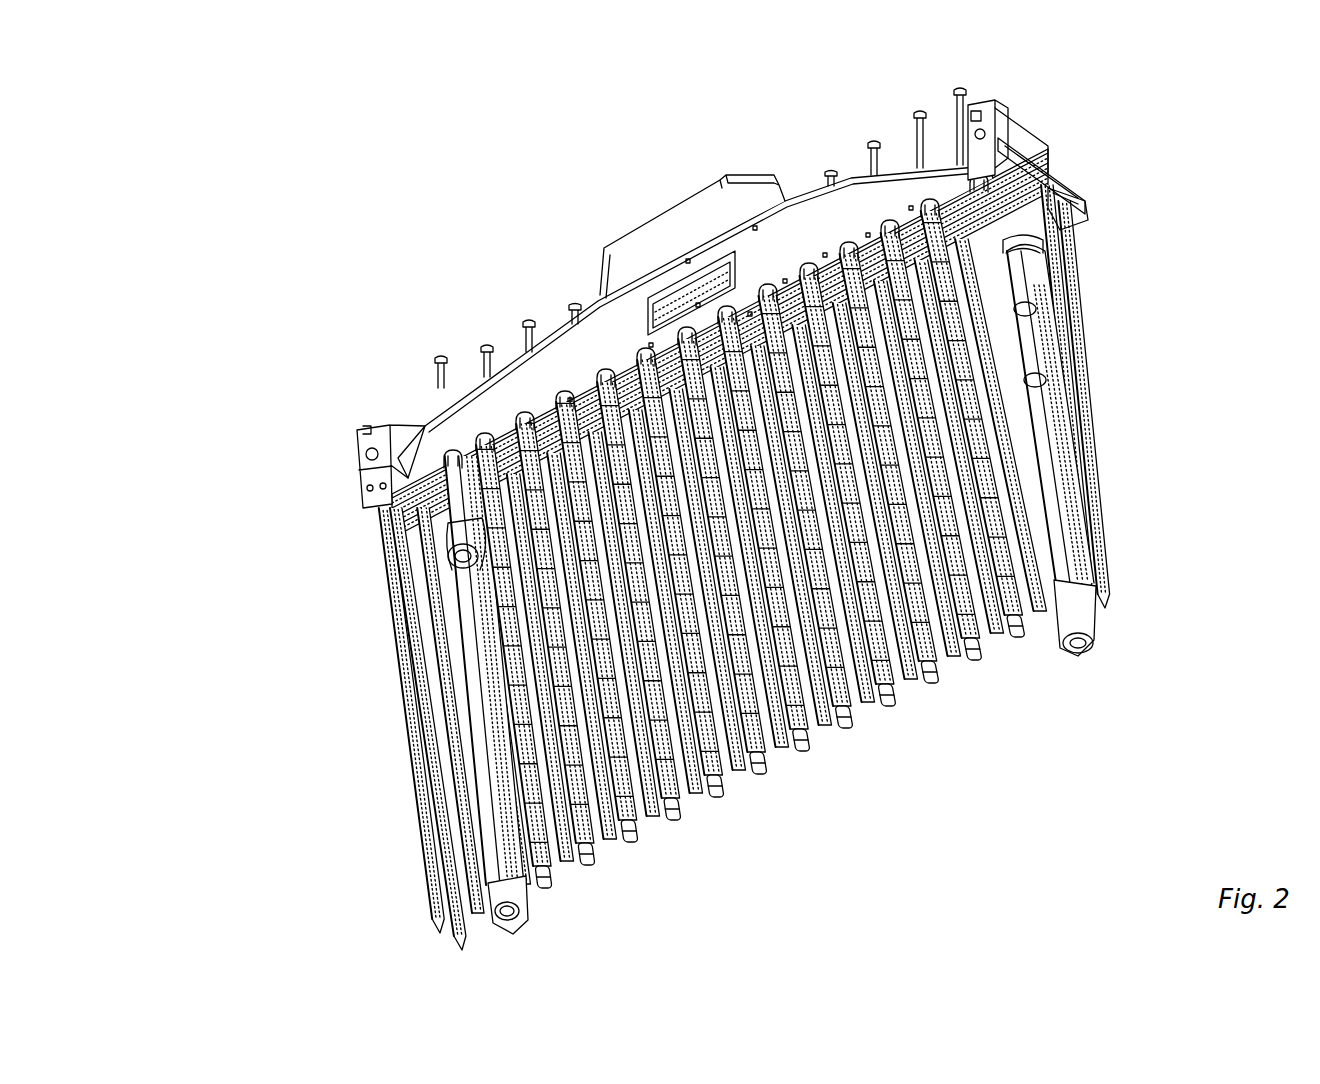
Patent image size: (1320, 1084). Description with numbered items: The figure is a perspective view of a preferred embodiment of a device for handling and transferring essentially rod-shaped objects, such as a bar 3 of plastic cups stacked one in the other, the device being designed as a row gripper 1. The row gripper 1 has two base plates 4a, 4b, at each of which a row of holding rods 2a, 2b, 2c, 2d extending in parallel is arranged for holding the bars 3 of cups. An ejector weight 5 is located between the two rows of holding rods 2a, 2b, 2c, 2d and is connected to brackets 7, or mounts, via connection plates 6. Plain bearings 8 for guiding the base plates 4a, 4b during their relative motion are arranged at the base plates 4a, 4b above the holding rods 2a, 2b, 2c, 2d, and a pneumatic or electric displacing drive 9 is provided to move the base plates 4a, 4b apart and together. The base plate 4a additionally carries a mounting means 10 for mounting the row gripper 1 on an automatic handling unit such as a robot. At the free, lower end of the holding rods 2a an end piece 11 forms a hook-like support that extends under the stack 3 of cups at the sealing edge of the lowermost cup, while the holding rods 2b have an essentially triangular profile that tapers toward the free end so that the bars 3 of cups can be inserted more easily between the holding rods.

The row gripper 1 is at (633, 506).
The holding rod 2a is at (877, 668).
The holding rod 2b is at (855, 690).
The holding rod 2c is at (1082, 520).
The holding rod 2d is at (1058, 482).
The bar of cups 3 is at (1073, 612).
The base plate 4a is at (1068, 204).
The base plate 4b is at (990, 145).
The ejector weight 5 is at (1015, 235).
The connection plate 6 is at (520, 447).
The bracket 7 is at (905, 104).
The plain bearing 8 is at (1047, 160).
The displacing drive 9 is at (727, 292).
The mounting means 10 is at (637, 245).
The end piece 11 is at (978, 670).